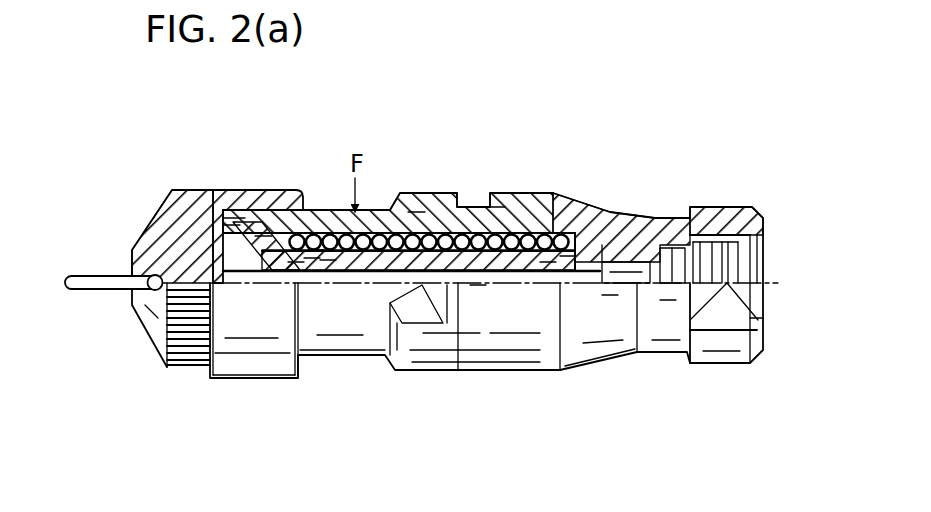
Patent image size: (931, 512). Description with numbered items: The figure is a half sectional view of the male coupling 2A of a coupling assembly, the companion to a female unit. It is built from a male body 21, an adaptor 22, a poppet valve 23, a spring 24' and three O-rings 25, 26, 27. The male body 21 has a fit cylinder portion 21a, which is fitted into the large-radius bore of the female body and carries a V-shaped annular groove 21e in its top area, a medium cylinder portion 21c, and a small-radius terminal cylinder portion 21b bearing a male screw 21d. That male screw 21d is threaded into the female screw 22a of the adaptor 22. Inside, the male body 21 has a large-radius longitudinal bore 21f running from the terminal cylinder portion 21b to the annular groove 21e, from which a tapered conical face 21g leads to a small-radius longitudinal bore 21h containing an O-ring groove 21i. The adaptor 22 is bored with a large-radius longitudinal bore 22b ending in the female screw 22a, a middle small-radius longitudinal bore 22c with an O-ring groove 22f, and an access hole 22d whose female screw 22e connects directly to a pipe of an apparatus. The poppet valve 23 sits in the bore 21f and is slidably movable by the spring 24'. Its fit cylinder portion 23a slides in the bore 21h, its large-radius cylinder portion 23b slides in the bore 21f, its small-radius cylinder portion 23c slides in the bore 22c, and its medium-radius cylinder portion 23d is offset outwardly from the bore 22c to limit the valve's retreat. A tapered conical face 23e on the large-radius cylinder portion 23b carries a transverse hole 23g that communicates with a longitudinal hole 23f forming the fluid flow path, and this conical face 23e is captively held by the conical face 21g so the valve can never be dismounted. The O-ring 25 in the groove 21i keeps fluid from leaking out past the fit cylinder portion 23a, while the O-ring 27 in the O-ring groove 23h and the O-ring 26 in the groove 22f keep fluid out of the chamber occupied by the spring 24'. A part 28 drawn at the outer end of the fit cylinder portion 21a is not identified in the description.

The chuck assembly 2A is at (76, 188).
The male body 21 is at (458, 212).
The fit cylinder portion 21a is at (333, 208).
The terminal cylinder portion 21b is at (478, 285).
The medium cylinder portion 21c is at (425, 375).
The male screw 21d is at (497, 210).
The annular groove 21e is at (283, 208).
The large-radius longitudinal bore 21f is at (377, 285).
The tapered conical face 21g is at (294, 262).
The small-radius longitudinal bore 21h is at (205, 292).
The O-ring groove 21i is at (235, 218).
The adaptor 22 is at (640, 218).
The female screw 22a is at (548, 262).
The large-radius longitudinal bore 22b is at (578, 240).
The small-radius longitudinal bore 22c is at (668, 300).
The access hole 22d is at (707, 255).
The female screw 22e is at (758, 318).
The O-ring groove 22f is at (601, 220).
The poppet valve 23 is at (262, 250).
The fit cylinder portion 23a is at (212, 203).
The large-radius cylinder portion 23b is at (316, 250).
The small-radius cylinder portion 23c is at (567, 255).
The medium-radius cylinder portion 23d is at (416, 212).
The tapered conical face 23e is at (264, 235).
The longitudinal hole 23f is at (438, 280).
The transverse hole 23g is at (258, 230).
The O-ring groove 23h is at (328, 260).
The spring 24' is at (429, 187).
The O-ring 25 is at (232, 228).
The O-ring 26 is at (610, 295).
The O-ring 27 is at (312, 258).
The head with pin 28 is at (157, 318).